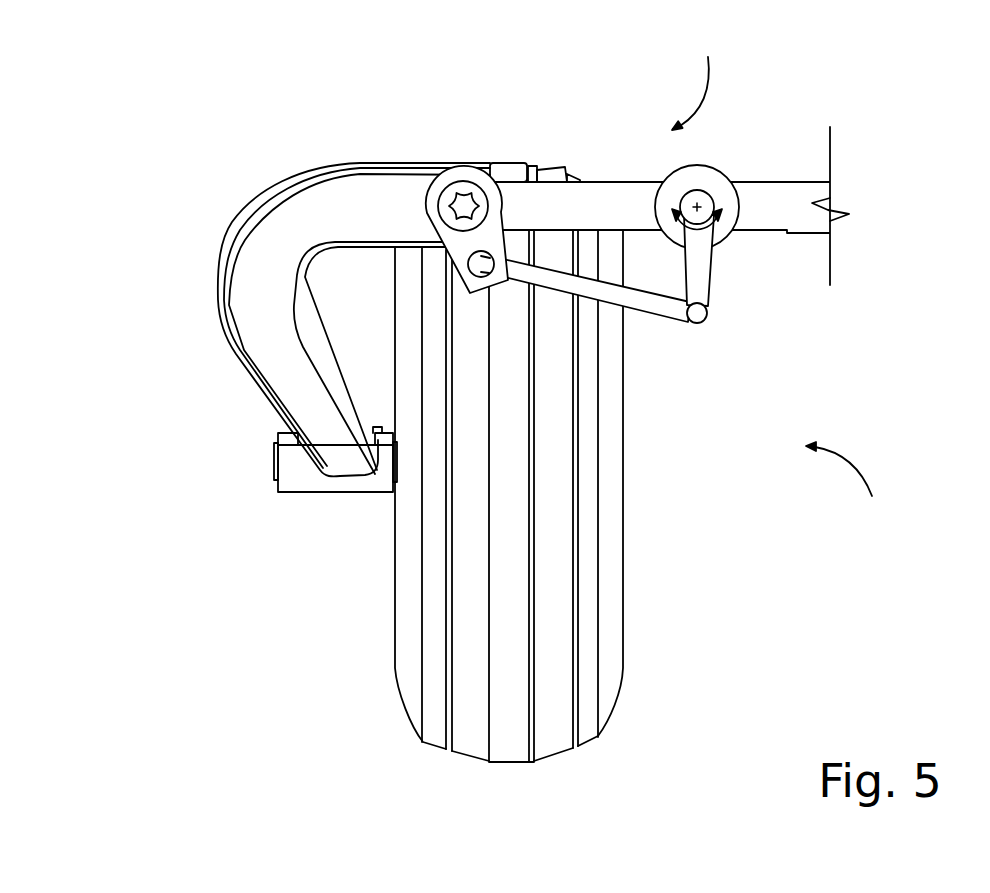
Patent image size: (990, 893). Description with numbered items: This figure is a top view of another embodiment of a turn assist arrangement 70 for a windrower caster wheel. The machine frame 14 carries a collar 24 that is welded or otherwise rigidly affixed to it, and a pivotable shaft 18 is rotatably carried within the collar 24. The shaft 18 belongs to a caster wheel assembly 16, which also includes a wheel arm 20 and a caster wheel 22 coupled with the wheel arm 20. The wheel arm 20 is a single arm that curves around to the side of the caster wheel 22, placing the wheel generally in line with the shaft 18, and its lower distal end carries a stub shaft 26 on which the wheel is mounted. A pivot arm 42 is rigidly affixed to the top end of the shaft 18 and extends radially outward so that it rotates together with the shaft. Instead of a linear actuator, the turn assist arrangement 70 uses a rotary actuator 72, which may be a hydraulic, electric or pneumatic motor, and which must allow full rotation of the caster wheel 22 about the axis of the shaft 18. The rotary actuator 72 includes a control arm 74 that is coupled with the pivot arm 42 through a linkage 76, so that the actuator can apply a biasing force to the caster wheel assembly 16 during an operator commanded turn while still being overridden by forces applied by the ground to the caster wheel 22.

The frame 14 is at (639, 182).
The caster wheel assembly 16 is at (850, 481).
The pivotable shaft 18 is at (463, 198).
The wheel arm 20 is at (352, 163).
The caster wheel 22 is at (623, 623).
The collar 24 is at (440, 195).
The stub shaft 26 is at (274, 460).
The pivot arm 42 is at (503, 220).
The turn assist arrangement 70 is at (694, 80).
The rotary actuator 72 is at (707, 166).
The control arm 74 is at (709, 272).
The linkage 76 is at (650, 317).